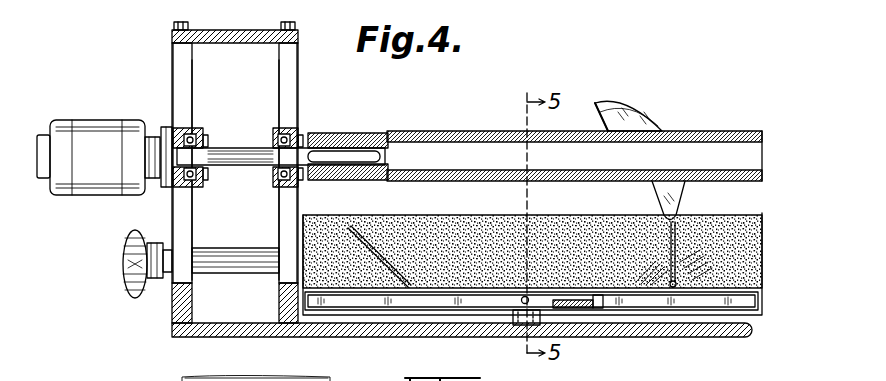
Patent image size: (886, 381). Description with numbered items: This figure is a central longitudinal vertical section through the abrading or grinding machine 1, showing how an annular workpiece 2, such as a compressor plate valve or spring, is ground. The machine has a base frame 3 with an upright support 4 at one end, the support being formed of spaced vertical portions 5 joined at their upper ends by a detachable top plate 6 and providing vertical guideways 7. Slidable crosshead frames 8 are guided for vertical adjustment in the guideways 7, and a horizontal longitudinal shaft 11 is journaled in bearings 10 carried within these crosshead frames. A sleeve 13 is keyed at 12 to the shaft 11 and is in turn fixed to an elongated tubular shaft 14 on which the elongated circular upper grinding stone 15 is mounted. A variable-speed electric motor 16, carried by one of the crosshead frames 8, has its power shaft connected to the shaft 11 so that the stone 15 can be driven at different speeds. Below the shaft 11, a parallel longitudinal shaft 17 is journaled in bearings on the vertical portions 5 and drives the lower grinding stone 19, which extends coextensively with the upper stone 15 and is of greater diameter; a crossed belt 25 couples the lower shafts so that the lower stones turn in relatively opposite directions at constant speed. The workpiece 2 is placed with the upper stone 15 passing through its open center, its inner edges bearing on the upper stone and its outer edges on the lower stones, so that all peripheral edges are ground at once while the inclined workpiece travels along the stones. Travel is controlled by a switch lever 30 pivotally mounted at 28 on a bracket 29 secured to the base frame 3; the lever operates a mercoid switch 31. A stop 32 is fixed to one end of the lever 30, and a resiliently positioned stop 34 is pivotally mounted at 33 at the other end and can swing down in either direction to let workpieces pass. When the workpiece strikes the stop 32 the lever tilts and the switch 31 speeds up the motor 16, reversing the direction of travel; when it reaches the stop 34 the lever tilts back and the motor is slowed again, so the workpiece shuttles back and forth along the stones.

The abrading or grinding machine 1 is at (310, 57).
The workpiece 2 is at (655, 122).
The base frame 3 is at (220, 337).
The upright support 4 is at (170, 297).
The spaced vertical portions 5 is at (280, 213).
The detachable top plate 6 is at (240, 32).
The vertical guideways 7 is at (180, 90).
The slidable crosshead frames 8 is at (190, 127).
The bearings 10 is at (273, 132).
The horizontal longitudinal shaft 11 is at (236, 145).
The key 12 is at (338, 160).
The sleeve 13 is at (378, 143).
The elongated tubular shaft 14 is at (452, 135).
The upper abrading or grinding stone 15 is at (572, 130).
The motor 16 is at (100, 185).
The parallel longitudinal shaft 17 is at (240, 248).
The lower abrading or grinding stone 19 is at (500, 214).
The crossed belt 25 is at (128, 226).
The pivot 28 is at (515, 315).
The bracket 29 is at (523, 322).
The switch lever 30 is at (445, 298).
The mercoid switch 31 is at (587, 312).
The stop 32 is at (395, 272).
The pivot 33 is at (673, 287).
The resiliently positioned stop 34 is at (683, 230).